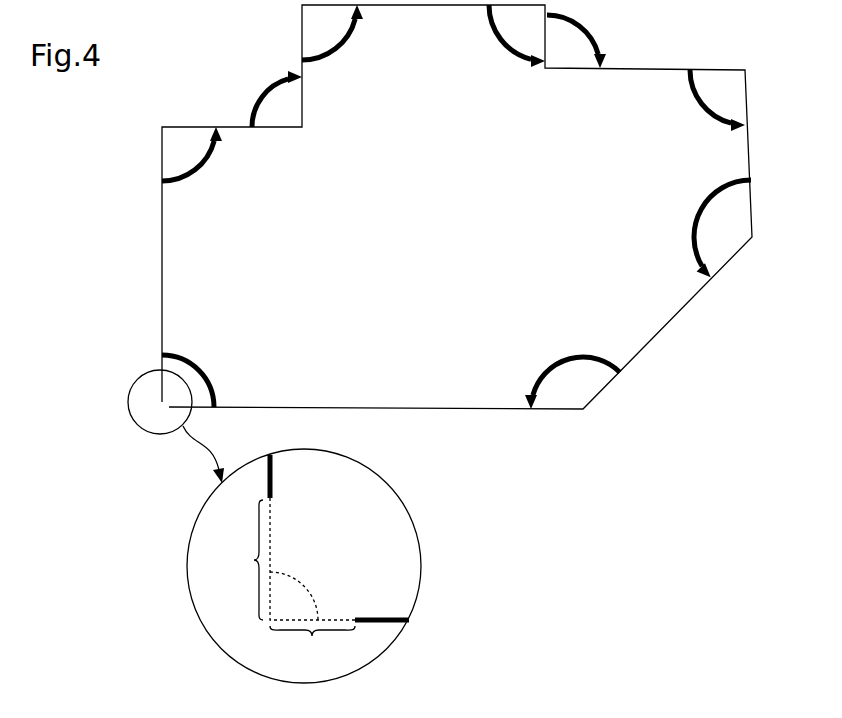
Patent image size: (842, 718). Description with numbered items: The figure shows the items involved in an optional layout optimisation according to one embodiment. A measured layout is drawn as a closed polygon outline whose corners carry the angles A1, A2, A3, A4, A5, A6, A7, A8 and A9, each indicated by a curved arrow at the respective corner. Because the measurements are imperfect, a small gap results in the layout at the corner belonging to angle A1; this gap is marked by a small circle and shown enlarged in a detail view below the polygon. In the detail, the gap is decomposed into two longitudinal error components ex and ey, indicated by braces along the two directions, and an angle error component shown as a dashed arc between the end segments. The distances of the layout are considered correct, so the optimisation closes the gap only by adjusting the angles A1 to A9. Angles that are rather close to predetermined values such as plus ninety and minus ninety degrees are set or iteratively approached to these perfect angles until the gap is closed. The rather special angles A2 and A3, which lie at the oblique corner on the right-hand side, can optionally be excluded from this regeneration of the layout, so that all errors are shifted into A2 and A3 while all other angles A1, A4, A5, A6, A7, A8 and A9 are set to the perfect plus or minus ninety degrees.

The angle A1 is at (209, 371).
The angle A2 is at (572, 358).
The angle A3 is at (700, 228).
The angle A4 is at (701, 109).
The angle A5 is at (594, 34).
The angle A6 is at (501, 42).
The angle A7 is at (344, 46).
The angle A8 is at (259, 85).
The angle A9 is at (201, 172).
The longitudinal error component ex is at (312, 651).
The longitudinal error component ey is at (238, 560).